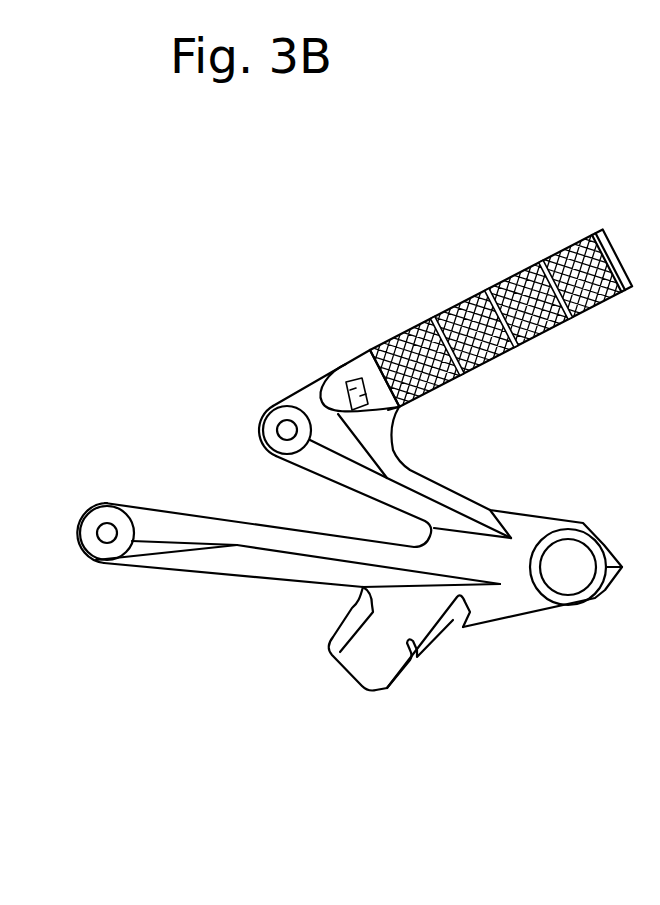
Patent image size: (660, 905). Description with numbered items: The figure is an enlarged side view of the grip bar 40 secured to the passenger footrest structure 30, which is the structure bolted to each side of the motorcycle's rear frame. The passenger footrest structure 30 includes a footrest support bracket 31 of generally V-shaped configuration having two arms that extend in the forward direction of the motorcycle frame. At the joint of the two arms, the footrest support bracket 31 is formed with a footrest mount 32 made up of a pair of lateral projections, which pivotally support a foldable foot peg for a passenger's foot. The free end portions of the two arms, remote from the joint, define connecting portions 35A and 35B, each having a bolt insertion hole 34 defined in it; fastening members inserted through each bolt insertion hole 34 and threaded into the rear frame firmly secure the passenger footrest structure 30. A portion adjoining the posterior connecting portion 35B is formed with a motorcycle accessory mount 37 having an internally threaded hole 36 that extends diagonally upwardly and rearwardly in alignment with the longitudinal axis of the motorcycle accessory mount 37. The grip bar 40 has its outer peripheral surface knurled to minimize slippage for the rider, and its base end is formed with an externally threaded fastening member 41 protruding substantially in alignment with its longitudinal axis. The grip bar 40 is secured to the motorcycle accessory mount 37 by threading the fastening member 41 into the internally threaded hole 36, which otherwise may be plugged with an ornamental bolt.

The passenger footrest structure 30 is at (289, 634).
The footrest support bracket 31 is at (240, 567).
The footrest mount 32 is at (353, 660).
The bolt insertion hole 34 is at (283, 420).
The connecting portion 35A is at (82, 523).
The posterior connecting portion 35B is at (263, 408).
The internally threaded hole 36 is at (370, 346).
The motorcycle accessory mount 37 is at (366, 368).
The grip bar 40 is at (623, 236).
The externally threaded fastening member 41 is at (402, 412).